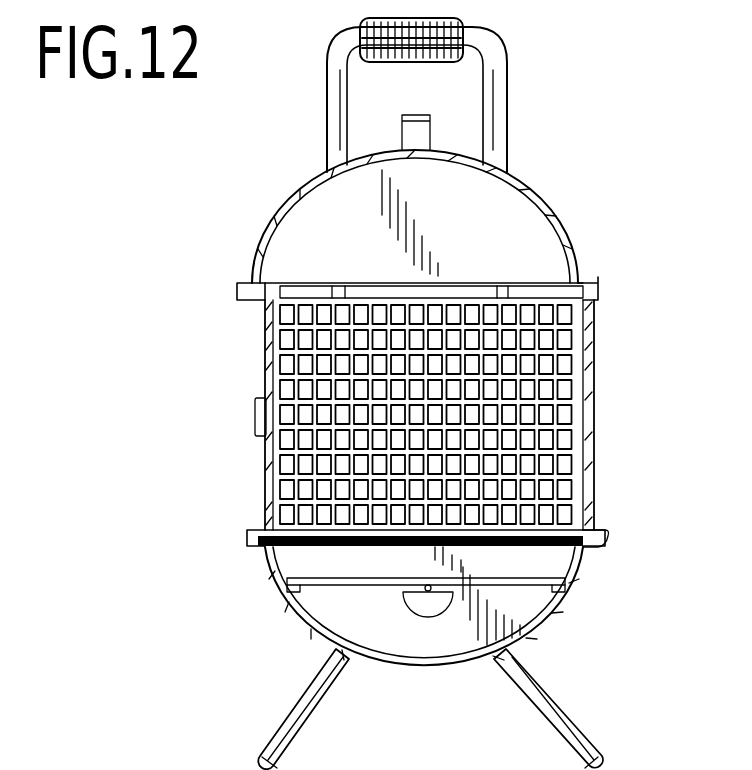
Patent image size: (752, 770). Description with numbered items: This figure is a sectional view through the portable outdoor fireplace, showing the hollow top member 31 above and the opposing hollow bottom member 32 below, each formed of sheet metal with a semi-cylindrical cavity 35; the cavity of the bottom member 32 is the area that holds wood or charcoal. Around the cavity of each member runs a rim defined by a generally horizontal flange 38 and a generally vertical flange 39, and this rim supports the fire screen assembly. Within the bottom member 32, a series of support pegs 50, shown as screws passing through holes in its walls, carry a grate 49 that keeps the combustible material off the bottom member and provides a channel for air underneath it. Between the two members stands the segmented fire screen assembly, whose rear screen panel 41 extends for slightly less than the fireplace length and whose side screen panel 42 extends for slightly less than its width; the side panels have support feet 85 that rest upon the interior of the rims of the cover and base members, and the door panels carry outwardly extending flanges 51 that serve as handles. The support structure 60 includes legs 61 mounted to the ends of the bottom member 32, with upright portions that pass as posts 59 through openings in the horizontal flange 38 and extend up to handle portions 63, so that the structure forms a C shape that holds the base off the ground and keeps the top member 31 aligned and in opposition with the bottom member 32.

The top member 31 is at (552, 212).
The bottom member 32 is at (545, 640).
The semi-cylindrical cavity 35 is at (555, 568).
The horizontal flange 38 is at (248, 282).
The vertical flange 39 is at (608, 538).
The rear screen panel 41 is at (596, 455).
The side screen panel 42 is at (585, 366).
The grate 49 is at (295, 612).
The support pegs 50 is at (571, 606).
The outwardly extending flanges 51 is at (255, 416).
The posts 59 is at (500, 297).
The support structure 60 is at (405, 709).
The legs 61 is at (285, 740).
The handle portions 63 is at (463, 24).
The support feet 85 is at (266, 298).